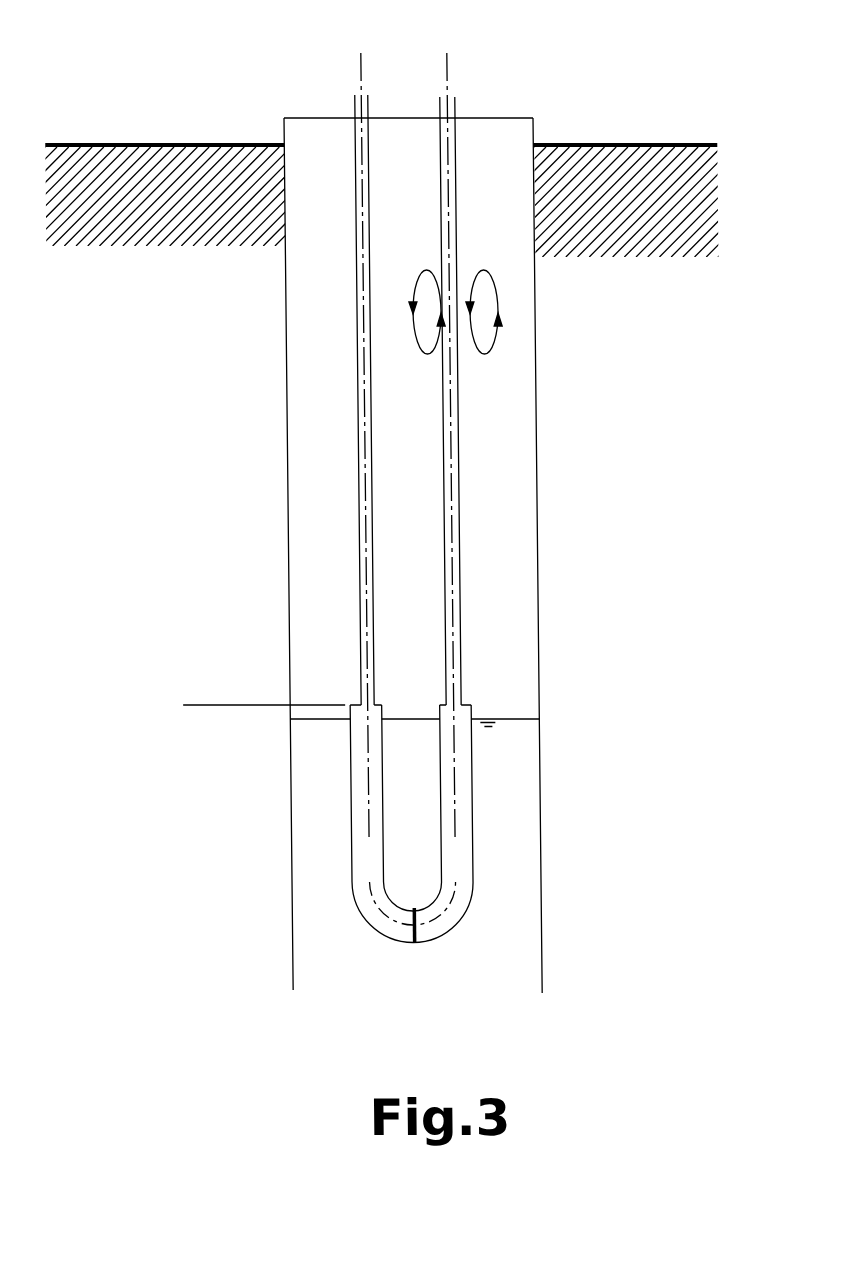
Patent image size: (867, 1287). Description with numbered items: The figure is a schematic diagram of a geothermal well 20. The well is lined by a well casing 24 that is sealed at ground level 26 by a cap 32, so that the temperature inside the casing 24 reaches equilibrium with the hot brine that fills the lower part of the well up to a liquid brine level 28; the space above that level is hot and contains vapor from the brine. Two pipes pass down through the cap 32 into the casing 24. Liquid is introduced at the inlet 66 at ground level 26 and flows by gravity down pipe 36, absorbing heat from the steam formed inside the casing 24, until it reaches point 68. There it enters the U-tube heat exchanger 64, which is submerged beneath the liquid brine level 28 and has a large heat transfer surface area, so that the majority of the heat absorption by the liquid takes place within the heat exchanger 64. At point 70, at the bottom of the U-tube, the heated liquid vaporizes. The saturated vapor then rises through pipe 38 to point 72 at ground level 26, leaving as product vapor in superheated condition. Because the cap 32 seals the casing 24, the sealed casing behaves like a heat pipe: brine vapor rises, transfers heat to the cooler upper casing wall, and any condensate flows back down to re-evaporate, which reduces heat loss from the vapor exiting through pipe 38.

The geothermal well 20 is at (327, 557).
The well casing 24 is at (284, 342).
The ground level 26 is at (690, 145).
The liquid brine level 28 is at (533, 719).
The cap 32 is at (503, 118).
The pipe 36 is at (355, 453).
The pipe 38 is at (457, 491).
The U-tube heat exchanger 64 is at (344, 858).
The inlet 66 is at (362, 68).
The point 68 is at (206, 705).
The point 70 is at (406, 943).
The point 72 is at (448, 70).